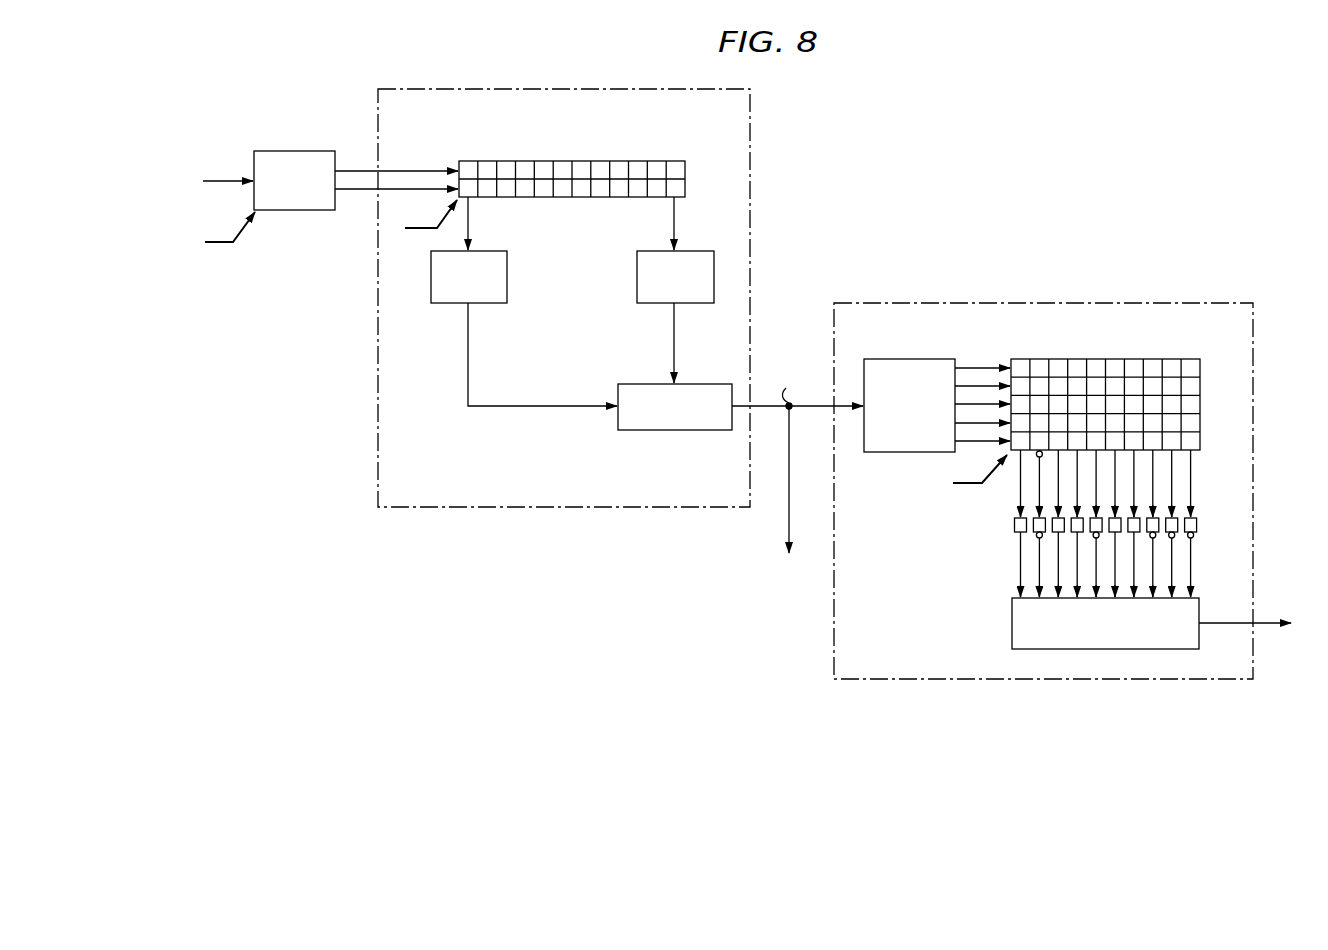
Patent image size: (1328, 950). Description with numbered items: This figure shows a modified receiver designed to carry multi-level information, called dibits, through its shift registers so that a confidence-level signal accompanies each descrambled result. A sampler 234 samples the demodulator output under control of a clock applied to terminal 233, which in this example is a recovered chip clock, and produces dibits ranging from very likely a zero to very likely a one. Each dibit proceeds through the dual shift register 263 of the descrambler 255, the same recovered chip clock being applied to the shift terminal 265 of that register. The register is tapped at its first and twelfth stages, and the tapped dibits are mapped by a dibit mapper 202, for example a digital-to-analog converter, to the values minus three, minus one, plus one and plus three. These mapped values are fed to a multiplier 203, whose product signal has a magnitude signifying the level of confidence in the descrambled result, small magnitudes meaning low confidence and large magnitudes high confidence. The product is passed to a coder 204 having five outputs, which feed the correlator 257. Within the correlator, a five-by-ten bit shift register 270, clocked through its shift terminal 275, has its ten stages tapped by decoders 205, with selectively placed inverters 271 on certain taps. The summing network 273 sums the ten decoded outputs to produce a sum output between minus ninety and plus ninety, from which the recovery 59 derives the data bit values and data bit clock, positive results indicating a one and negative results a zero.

The sampler 234 is at (283, 151).
The terminal 233 is at (243, 230).
The shift register 263 is at (515, 161).
The shift terminal 265 is at (405, 228).
The descrambler 255 is at (750, 152).
The dibit mapper 202 is at (508, 267).
The multiplier 203 is at (640, 384).
The recovery 59 is at (754, 492).
The correlator 257 is at (940, 303).
The coder 204 is at (905, 359).
The shift register 270 is at (1056, 359).
The shift terminal 275 is at (957, 470).
The decoder 205 is at (1014, 520).
The inverter 271 is at (1036, 456).
The summing network 273 is at (1012, 626).